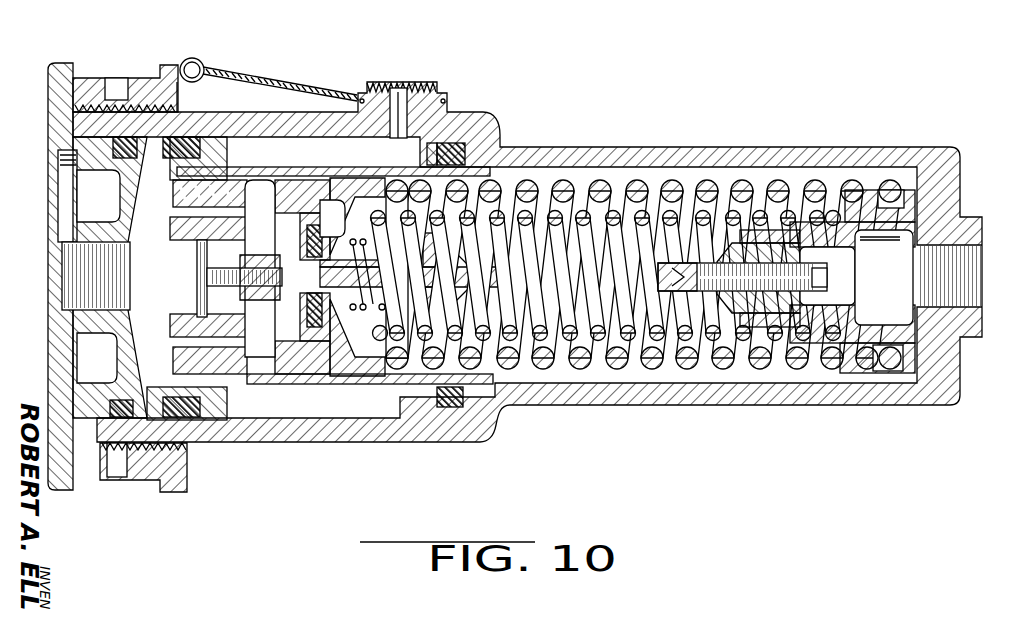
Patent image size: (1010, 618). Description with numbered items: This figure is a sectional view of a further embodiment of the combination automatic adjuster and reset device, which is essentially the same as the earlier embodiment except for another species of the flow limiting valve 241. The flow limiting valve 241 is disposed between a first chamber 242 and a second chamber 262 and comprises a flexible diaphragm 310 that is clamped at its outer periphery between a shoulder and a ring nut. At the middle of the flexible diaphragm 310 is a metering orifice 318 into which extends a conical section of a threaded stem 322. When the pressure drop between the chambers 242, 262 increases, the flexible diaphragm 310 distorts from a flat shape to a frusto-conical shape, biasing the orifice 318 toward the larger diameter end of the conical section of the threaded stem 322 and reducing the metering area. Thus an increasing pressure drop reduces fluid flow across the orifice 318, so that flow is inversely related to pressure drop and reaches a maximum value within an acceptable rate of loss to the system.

The flexible diaphragm 310 is at (147, 293).
The orifice 318 is at (207, 271).
The threaded stem 322 is at (253, 242).
The flow limiting valve 241 is at (208, 305).
The chamber 242 is at (160, 183).
The chamber 262 is at (333, 215).